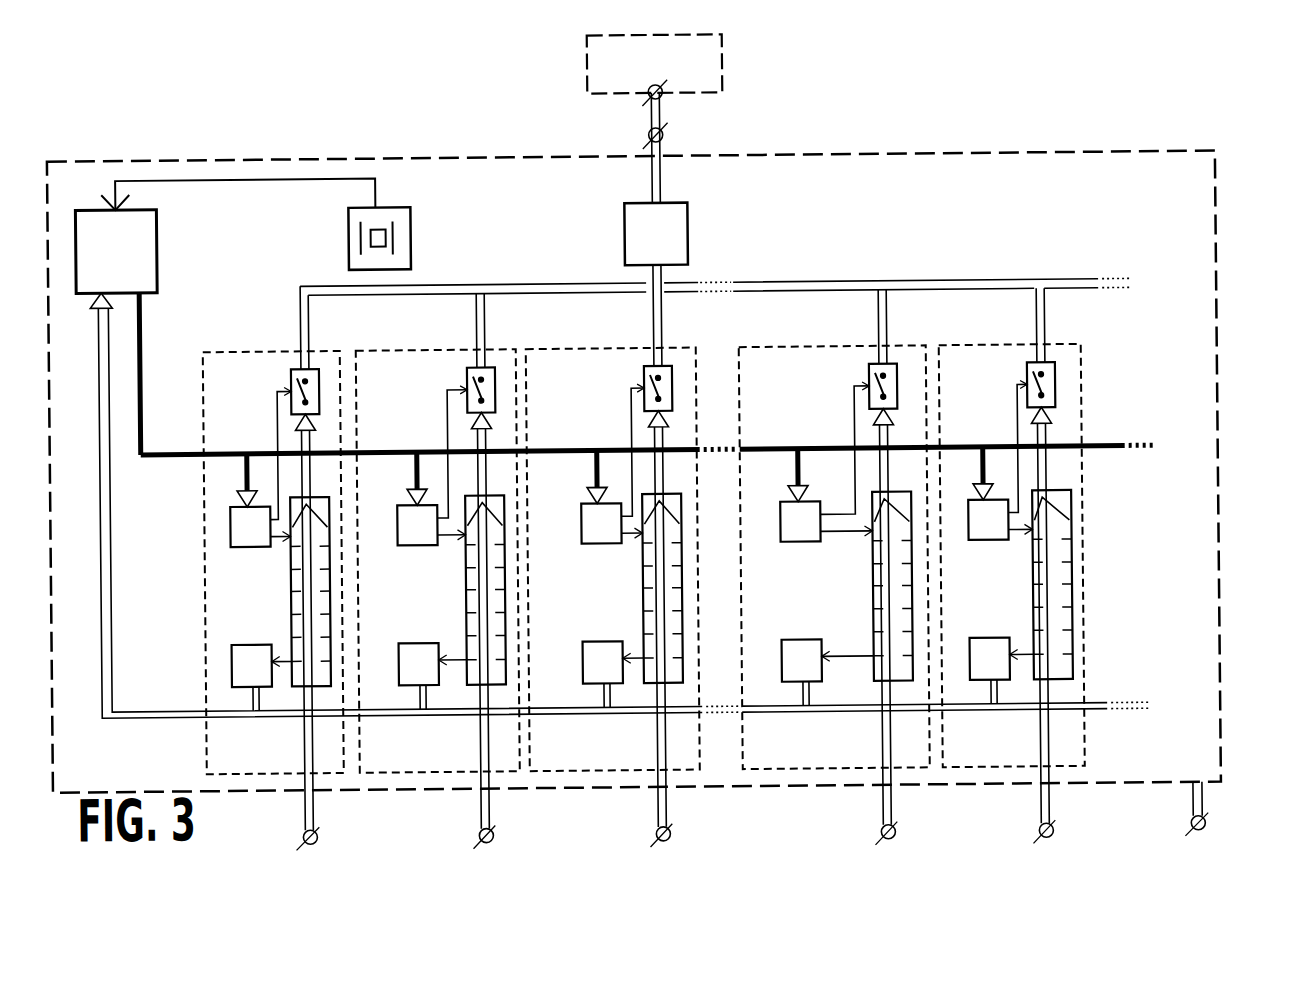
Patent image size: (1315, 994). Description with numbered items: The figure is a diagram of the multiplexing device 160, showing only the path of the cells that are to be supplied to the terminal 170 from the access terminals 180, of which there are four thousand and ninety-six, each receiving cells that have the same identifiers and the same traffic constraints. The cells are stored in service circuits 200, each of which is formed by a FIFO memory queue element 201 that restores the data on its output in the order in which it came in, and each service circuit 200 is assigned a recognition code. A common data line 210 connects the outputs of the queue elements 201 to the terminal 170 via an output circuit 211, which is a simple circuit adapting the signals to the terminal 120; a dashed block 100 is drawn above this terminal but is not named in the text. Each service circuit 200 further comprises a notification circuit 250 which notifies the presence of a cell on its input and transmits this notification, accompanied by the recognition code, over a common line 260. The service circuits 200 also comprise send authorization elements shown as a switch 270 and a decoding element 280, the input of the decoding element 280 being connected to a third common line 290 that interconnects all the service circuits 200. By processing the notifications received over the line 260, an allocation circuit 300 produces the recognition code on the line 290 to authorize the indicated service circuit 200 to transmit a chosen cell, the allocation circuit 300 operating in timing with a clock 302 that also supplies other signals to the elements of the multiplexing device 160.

The host system 100 is at (726, 72).
The terminal 120 is at (648, 98).
The terminal 170 is at (666, 138).
The output circuit 211 is at (690, 236).
The common data line 210 is at (437, 283).
The allocation circuit 300 is at (159, 244).
The clock 302 is at (413, 240).
The third common line 290 is at (150, 343).
The common line 260 is at (112, 600).
The service circuit 200 is at (212, 348).
The switch 270 is at (1027, 386).
The decoding element 280 is at (230, 524).
The notification circuit 250 is at (230, 656).
The FIFO memory queue element 201 is at (1032, 686).
The access terminal 180 is at (315, 834).
The multiplexing device 160 is at (1219, 704).